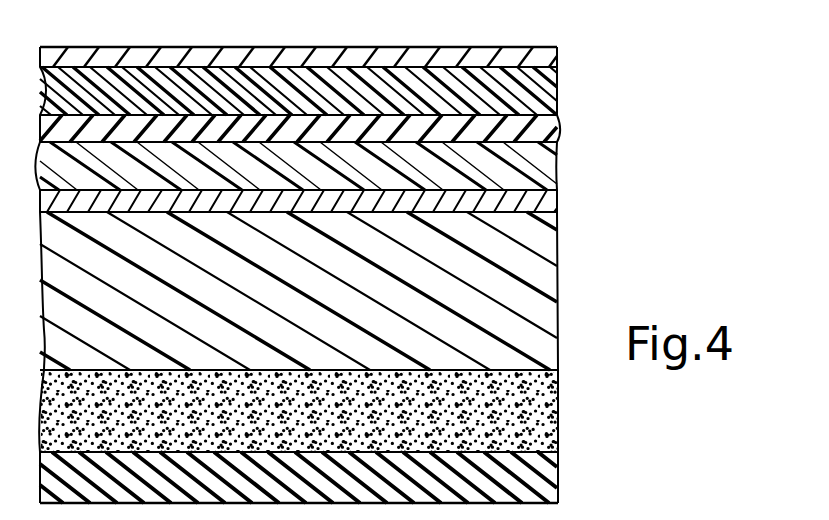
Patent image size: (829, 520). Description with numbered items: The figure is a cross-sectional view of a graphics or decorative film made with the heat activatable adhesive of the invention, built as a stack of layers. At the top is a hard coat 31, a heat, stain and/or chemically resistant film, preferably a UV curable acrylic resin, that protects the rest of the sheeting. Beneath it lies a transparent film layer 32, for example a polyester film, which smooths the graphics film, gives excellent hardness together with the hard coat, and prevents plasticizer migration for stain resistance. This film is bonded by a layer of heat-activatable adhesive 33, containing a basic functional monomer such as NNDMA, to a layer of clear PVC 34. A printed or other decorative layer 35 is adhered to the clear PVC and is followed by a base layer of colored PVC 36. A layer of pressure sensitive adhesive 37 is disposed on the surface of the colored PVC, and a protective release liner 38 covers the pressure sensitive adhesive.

The hard coat 31 is at (550, 60).
The transparent film layer 32 is at (558, 93).
The heat-activatable adhesive 33 is at (552, 125).
The clear PVC layer 34 is at (545, 172).
The decorative layer 35 is at (555, 207).
The colored PVC base layer 36 is at (540, 310).
The pressure sensitive adhesive 37 is at (550, 423).
The protective release liner 38 is at (542, 483).